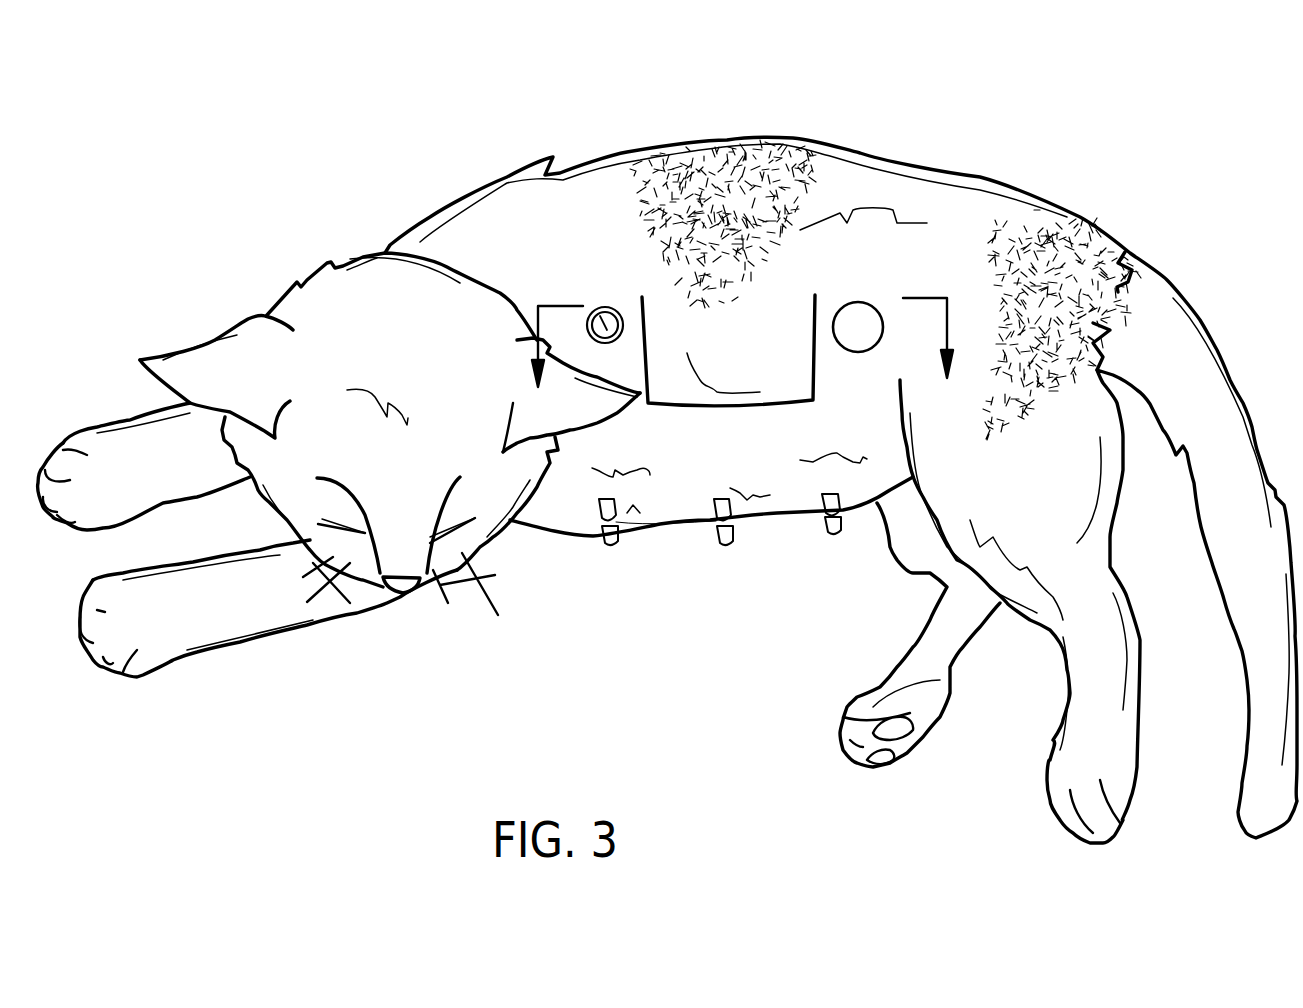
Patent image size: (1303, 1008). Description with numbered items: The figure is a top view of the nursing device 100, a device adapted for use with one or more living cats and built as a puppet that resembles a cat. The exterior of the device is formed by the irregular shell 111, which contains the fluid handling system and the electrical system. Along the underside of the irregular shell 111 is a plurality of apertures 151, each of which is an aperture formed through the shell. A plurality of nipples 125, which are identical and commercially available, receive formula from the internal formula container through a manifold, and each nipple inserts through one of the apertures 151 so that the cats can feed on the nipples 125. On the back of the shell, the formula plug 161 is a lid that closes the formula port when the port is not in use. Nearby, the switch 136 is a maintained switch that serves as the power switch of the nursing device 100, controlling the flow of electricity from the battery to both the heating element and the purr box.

The nursing device 100 is at (226, 219).
The irregular shell 111 is at (377, 247).
The plurality of nipples 125 is at (717, 547).
The switch 136 is at (603, 310).
The plurality of apertures 151 is at (723, 500).
The formula plug 161 is at (857, 320).